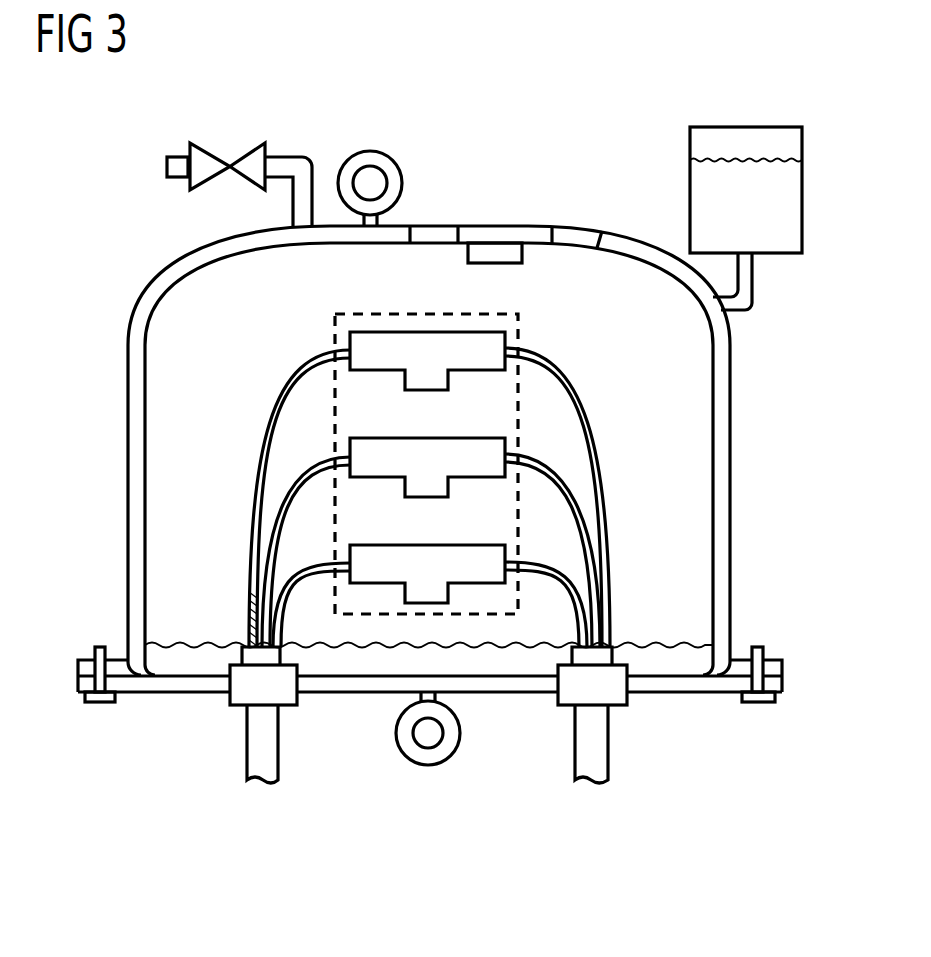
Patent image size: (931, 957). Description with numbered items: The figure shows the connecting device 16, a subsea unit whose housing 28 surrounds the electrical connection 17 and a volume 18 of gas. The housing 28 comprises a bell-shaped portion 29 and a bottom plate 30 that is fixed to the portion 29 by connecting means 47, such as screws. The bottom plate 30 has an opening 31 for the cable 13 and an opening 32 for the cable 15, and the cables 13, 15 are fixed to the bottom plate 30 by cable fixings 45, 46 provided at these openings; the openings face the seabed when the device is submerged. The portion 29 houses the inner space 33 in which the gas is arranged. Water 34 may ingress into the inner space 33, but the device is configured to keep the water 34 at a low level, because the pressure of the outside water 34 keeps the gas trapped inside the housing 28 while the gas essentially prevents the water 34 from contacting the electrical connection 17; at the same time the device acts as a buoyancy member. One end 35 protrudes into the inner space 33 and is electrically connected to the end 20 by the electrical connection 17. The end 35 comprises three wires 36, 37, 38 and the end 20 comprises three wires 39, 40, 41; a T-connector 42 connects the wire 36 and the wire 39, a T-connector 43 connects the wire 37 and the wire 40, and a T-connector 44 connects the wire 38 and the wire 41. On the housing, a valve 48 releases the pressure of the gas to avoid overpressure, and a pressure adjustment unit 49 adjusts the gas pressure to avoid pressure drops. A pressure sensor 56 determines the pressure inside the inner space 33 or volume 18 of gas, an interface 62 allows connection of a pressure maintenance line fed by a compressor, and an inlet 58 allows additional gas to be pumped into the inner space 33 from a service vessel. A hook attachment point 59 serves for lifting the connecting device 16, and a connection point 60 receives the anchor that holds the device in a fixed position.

The cable 13 is at (283, 750).
The cable 15 is at (610, 746).
The connecting device 16 is at (512, 130).
The electrical connection 17 is at (520, 330).
The volume of gas 18 is at (411, 450).
The end 20 is at (612, 650).
The housing 28 is at (128, 438).
The portion 29 is at (137, 350).
The bottom plate 30 is at (138, 684).
The opening 31 is at (268, 707).
The opening 32 is at (601, 721).
The inner space 33 is at (258, 331).
The water 34 is at (680, 656).
The end 35 is at (248, 656).
The wire 36 is at (286, 398).
The wire 37 is at (290, 486).
The wire 38 is at (330, 576).
The wire 39 is at (568, 400).
The wire 40 is at (572, 494).
The wire 41 is at (530, 569).
The T-connector 42 is at (425, 342).
The T-connector 43 is at (370, 448).
The T-connector 44 is at (370, 557).
The cable fixing 45 is at (288, 697).
The cable fixing 46 is at (618, 697).
The connecting means 47 is at (98, 648).
The valve 48 is at (252, 160).
The pressure adjustment unit 49 is at (790, 205).
The pressure sensor 56 is at (495, 255).
The inlet 58 is at (576, 235).
The hook attachment point 59 is at (368, 160).
The connection point 60 is at (428, 758).
The interface 62 is at (435, 228).